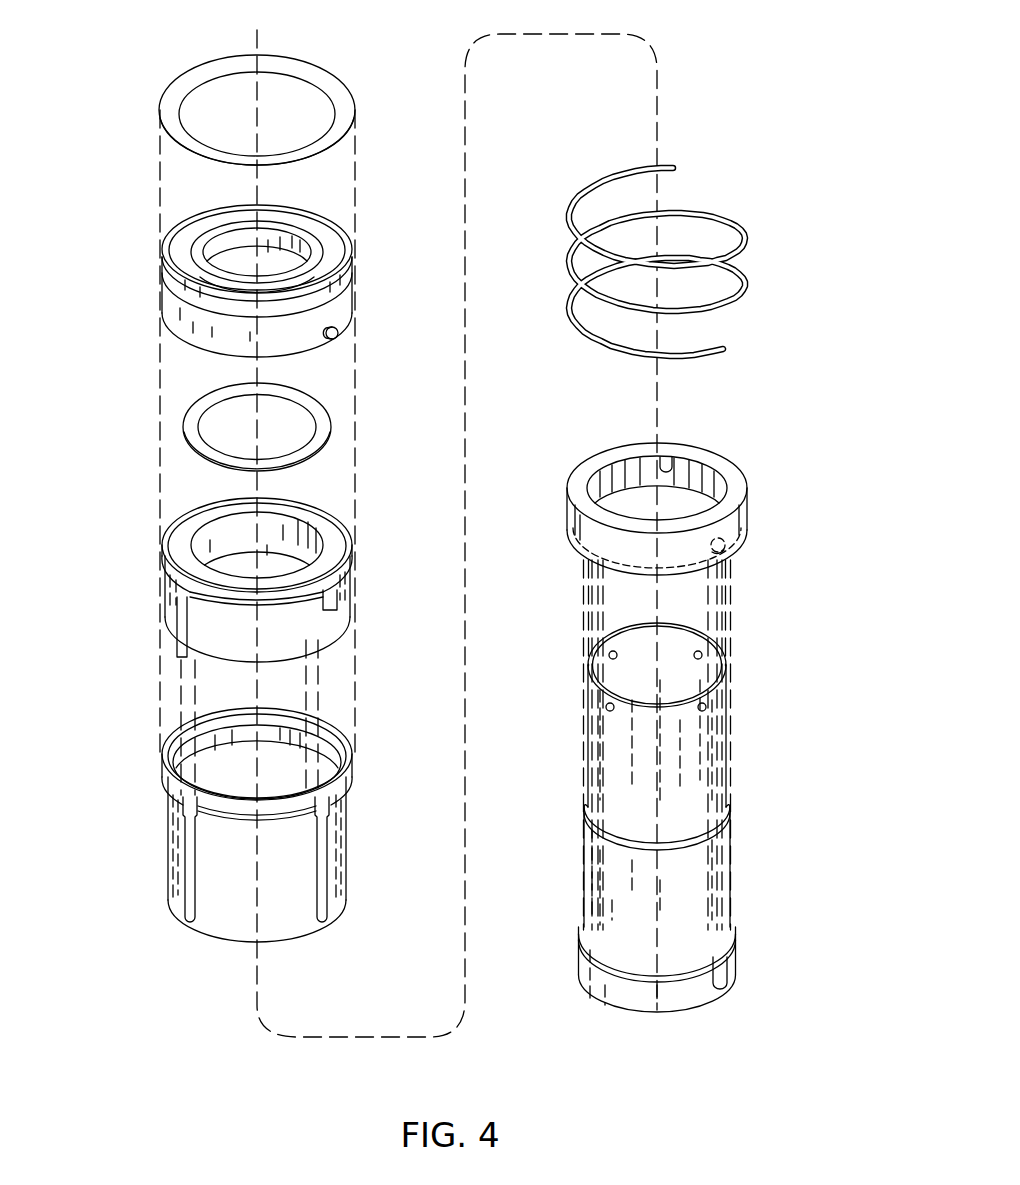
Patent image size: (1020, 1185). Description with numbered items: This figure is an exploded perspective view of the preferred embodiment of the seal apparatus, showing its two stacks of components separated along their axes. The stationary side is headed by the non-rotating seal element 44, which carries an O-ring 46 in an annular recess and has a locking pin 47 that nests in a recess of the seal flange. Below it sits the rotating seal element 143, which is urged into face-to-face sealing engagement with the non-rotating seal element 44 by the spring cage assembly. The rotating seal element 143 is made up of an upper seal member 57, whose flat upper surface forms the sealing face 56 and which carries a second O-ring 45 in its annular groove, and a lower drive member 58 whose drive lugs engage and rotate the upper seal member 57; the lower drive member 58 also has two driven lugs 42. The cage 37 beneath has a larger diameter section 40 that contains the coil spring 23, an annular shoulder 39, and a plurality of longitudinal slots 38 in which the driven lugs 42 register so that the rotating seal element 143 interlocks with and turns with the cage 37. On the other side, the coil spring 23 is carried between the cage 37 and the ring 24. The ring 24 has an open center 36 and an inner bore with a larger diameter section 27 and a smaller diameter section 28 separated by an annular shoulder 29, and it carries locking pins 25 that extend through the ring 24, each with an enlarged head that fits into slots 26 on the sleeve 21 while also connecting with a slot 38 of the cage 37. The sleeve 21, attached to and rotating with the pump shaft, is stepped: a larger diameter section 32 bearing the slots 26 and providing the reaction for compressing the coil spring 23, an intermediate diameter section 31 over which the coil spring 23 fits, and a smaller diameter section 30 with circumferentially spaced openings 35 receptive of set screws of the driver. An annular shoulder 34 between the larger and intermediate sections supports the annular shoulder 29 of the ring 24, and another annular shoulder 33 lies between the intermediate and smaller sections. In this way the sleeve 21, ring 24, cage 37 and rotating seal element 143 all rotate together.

The O-ring 46 is at (332, 73).
The non-rotating seal element 44 is at (160, 313).
The locking pin 47 is at (334, 342).
The O-ring 45 is at (183, 428).
The rotating seal element 143 is at (244, 579).
The sealing face 56 is at (338, 545).
The upper seal member 57 is at (348, 588).
The lower drive member 58 is at (328, 637).
The driven lugs 42 is at (177, 653).
The cage 37 is at (257, 850).
The annular shoulder 39 is at (355, 783).
The longitudinal slots 38 is at (332, 843).
The larger diameter section 40 is at (217, 932).
The coil spring 23 is at (743, 237).
The smaller diameter section 28 is at (687, 475).
The ring 24 is at (734, 464).
The open center 36 is at (640, 505).
The annular shoulder 29 is at (668, 466).
The larger diameter section 27 is at (570, 540).
The locking pins 25 is at (726, 548).
The sleeve 21 is at (669, 836).
The smaller diameter section 30 is at (728, 757).
The openings 35 is at (606, 706).
The annular shoulder 33 is at (688, 828).
The intermediate diameter section 31 is at (583, 886).
The larger diameter section 32 is at (691, 988).
The annular shoulder 34 is at (693, 967).
The slots 26 is at (735, 986).